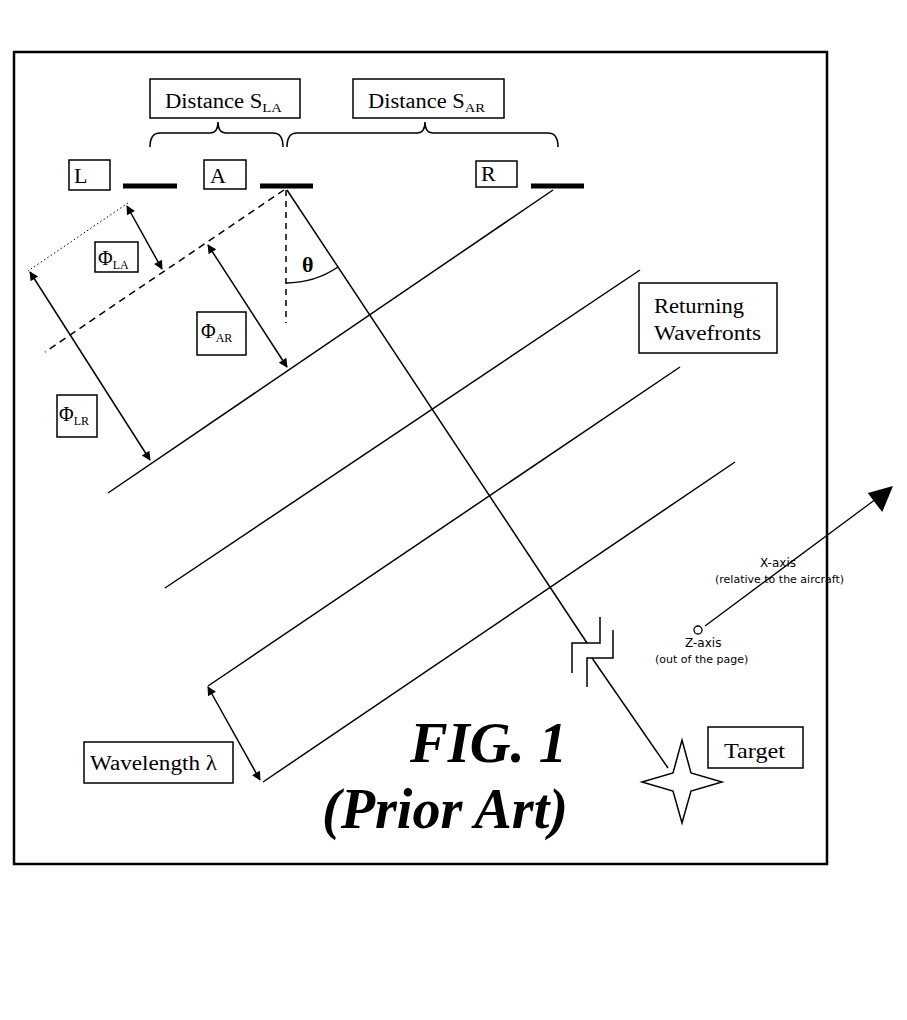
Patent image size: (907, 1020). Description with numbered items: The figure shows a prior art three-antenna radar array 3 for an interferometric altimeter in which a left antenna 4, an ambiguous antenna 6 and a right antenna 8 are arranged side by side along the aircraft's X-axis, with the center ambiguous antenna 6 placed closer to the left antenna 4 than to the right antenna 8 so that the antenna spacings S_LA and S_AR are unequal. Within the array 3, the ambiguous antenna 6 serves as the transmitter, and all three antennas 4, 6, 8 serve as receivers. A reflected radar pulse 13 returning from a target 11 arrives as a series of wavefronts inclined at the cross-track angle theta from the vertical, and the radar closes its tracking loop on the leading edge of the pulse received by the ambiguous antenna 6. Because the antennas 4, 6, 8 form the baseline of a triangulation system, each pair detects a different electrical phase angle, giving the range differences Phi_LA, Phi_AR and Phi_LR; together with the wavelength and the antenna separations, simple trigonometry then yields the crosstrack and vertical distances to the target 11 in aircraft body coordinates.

The radar antenna system (prior art) 3 is at (311, 65).
The left antenna 4 is at (135, 189).
The ambiguous antenna 6 is at (262, 189).
The right antenna 8 is at (533, 187).
The target 11 is at (660, 783).
The reflected radar pulse 13 is at (150, 463).